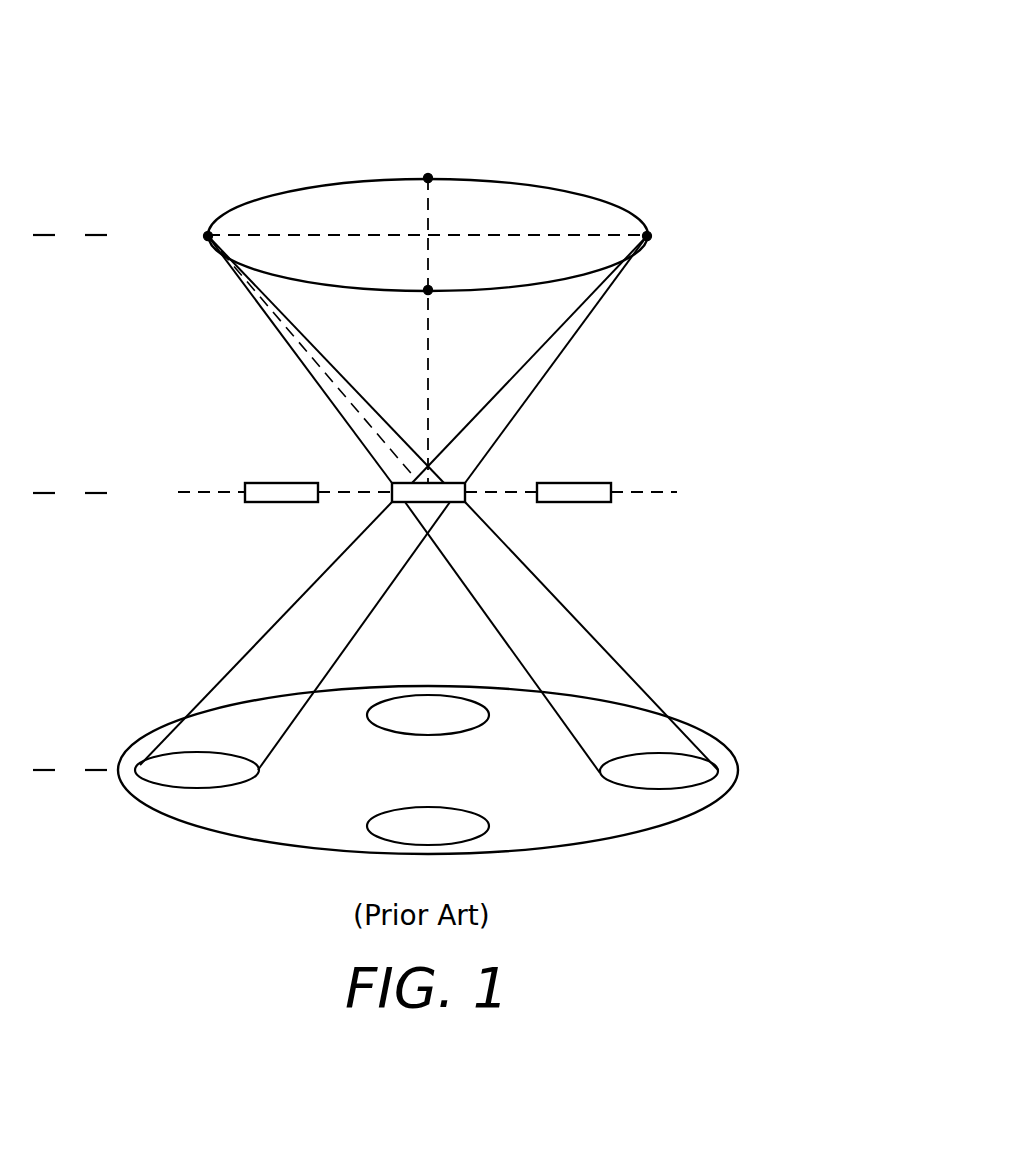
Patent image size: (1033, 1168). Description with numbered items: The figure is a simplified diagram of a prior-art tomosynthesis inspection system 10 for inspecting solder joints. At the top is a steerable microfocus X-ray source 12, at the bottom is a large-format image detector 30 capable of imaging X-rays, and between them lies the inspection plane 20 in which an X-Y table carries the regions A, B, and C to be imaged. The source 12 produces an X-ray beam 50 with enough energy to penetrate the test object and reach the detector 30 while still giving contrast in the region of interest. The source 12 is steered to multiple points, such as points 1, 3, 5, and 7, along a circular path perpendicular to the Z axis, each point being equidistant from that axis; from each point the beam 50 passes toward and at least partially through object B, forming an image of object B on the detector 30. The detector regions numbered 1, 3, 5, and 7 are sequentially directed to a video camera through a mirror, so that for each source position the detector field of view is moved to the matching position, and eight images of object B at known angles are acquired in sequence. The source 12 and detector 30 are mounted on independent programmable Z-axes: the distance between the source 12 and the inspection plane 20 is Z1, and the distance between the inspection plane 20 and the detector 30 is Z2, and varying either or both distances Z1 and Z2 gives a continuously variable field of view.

The system 10 is at (564, 161).
The steerable microfocus X-ray source 12 is at (650, 262).
The inspection plane 20 is at (507, 519).
The large-format image detector 30 is at (692, 696).
The X-ray beam 50 is at (548, 350).
The source position / detector region 1 is at (451, 506).
The source position / detector region 3 is at (428, 511).
The source position / detector region 5 is at (403, 506).
The source position / detector region 7 is at (428, 492).
The region A is at (272, 514).
The object B is at (428, 514).
The region C is at (584, 516).
The source-to-inspection-plane distance Z1 is at (70, 246).
The inspection-plane-to-detector distance Z2 is at (70, 504).